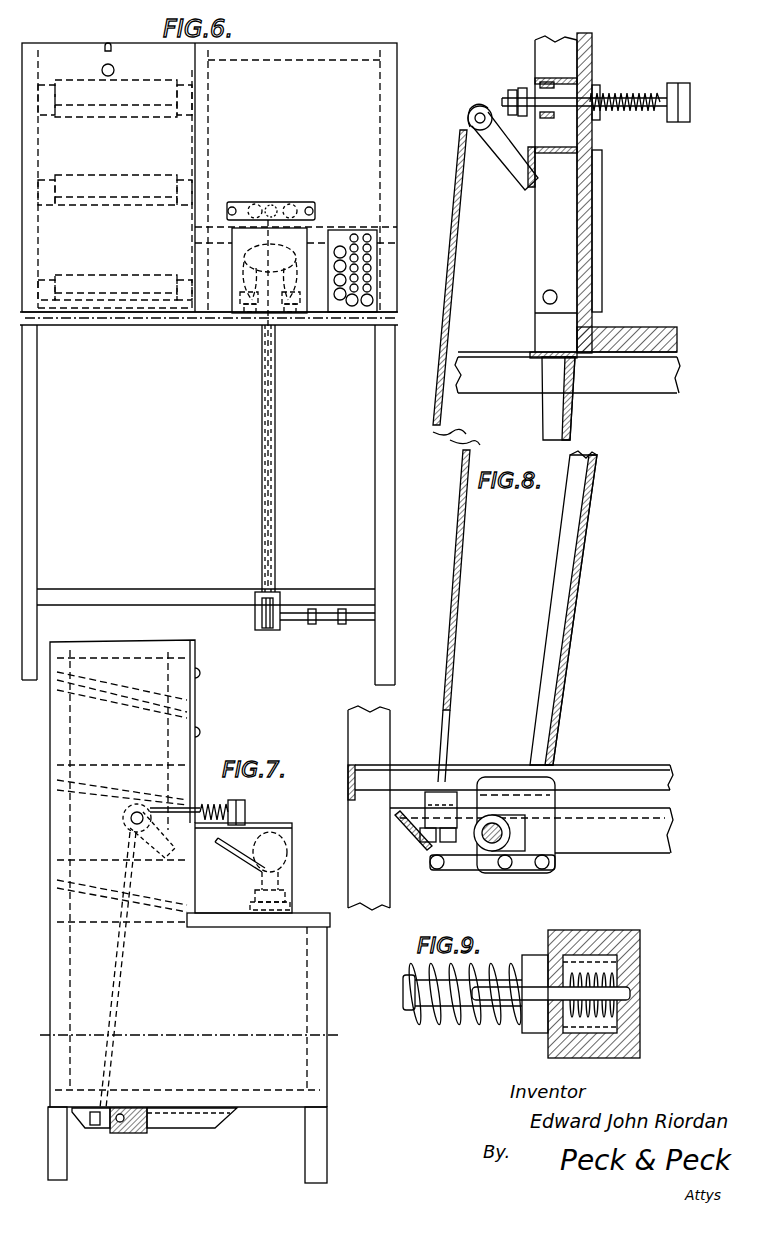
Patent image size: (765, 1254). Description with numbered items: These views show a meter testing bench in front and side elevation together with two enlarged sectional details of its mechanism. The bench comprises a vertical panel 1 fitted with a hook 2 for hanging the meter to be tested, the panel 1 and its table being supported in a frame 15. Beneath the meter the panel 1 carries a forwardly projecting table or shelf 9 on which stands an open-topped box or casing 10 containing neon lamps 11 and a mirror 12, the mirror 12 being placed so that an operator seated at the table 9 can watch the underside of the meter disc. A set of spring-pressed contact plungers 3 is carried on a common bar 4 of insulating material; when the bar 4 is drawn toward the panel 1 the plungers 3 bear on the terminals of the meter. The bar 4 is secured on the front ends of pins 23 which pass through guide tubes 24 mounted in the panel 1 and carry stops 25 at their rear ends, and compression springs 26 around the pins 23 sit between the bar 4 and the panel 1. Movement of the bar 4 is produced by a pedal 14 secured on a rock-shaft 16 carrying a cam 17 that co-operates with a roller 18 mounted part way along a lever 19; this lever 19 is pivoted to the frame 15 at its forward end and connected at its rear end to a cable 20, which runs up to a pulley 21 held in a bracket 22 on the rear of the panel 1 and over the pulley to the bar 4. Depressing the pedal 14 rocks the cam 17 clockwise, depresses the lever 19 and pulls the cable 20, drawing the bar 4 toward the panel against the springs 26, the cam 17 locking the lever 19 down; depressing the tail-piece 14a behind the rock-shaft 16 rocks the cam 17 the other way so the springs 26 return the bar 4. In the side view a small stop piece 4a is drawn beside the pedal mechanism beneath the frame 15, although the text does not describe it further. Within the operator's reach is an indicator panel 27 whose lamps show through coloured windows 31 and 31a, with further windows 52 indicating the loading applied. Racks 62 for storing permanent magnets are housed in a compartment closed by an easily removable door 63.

In FIG. 6, the vertical panel 1 is at (368, 122).
In FIG. 7, the vertical panel 1 is at (196, 688).
In FIG. 6, the hook 2 is at (274, 140).
In FIG. 7, the hook 2 is at (200, 733).
In FIG. 8, the spring-pressed contact plunger 3 is at (648, 126).
In FIG. 9, the spring-pressed contact plunger 3 is at (490, 1001).
In FIG. 6, the bar 4 is at (274, 202).
In FIG. 7, the bar 4 is at (243, 853).
In FIG. 8, the bar 4 is at (682, 83).
In FIG. 9, the bar 4 is at (617, 933).
In FIG. 7, the stop piece 4a is at (78, 1116).
In FIG. 6, the table or shelf 9 is at (222, 315).
In FIG. 7, the table or shelf 9 is at (218, 915).
In FIG. 8, the table or shelf 9 is at (657, 335).
In FIG. 6, the open-topped box or casing 10 is at (300, 283).
In FIG. 7, the open-topped box or casing 10 is at (292, 835).
In FIG. 6, the neon lamp 11 is at (258, 298).
In FIG. 7, the neon lamp 11 is at (285, 858).
In FIG. 6, the mirror 12 is at (276, 216).
In FIG. 7, the mirror 12 is at (248, 871).
In FIG. 6, the pedal 14 is at (327, 608).
In FIG. 7, the pedal 14 is at (200, 1110).
In FIG. 8, the pedal 14 is at (630, 822).
In FIG. 8, the tail-piece 14a is at (413, 820).
In FIG. 6, the frame 15 is at (386, 560).
In FIG. 7, the frame 15 is at (312, 1070).
In FIG. 8, the frame 15 is at (375, 718).
In FIG. 6, the rock-shaft 16 is at (352, 622).
In FIG. 7, the rock-shaft 16 is at (118, 1108).
In FIG. 8, the rock-shaft 16 is at (478, 850).
In FIG. 6, the cam 17 is at (256, 612).
In FIG. 7, the cam 17 is at (130, 1110).
In FIG. 8, the cam 17 is at (520, 833).
In FIG. 6, the roller 18 is at (268, 631).
In FIG. 8, the roller 18 is at (500, 872).
In FIG. 7, the lever 19 is at (130, 1134).
In FIG. 8, the lever 19 is at (488, 863).
In FIG. 6, the cable 20 is at (258, 470).
In FIG. 7, the cable 20 is at (120, 968).
In FIG. 8, the cable 20 is at (452, 456).
In FIG. 7, the pulley 21 is at (124, 818).
In FIG. 8, the pulley 21 is at (471, 134).
In FIG. 8, the bracket 22 is at (512, 153).
In FIG. 6, the pin 23 is at (233, 206).
In FIG. 8, the pin 23 is at (553, 106).
In FIG. 9, the pin 23 is at (403, 1000).
In FIG. 8, the guide tube 24 is at (548, 84).
In FIG. 8, the stop 25 is at (547, 98).
In FIG. 8, the compression spring 26 is at (638, 113).
In FIG. 9, the compression spring 26 is at (443, 1022).
In FIG. 6, the indicator panel 27 is at (377, 267).
In FIG. 6, the windows 31 is at (363, 238).
In FIG. 6, the windows 31a is at (371, 258).
In FIG. 6, the windows 52 is at (328, 300).
In FIG. 6, the rack 62 is at (105, 108).
In FIG. 7, the rack 62 is at (118, 700).
In FIG. 6, the door 63 is at (112, 233).